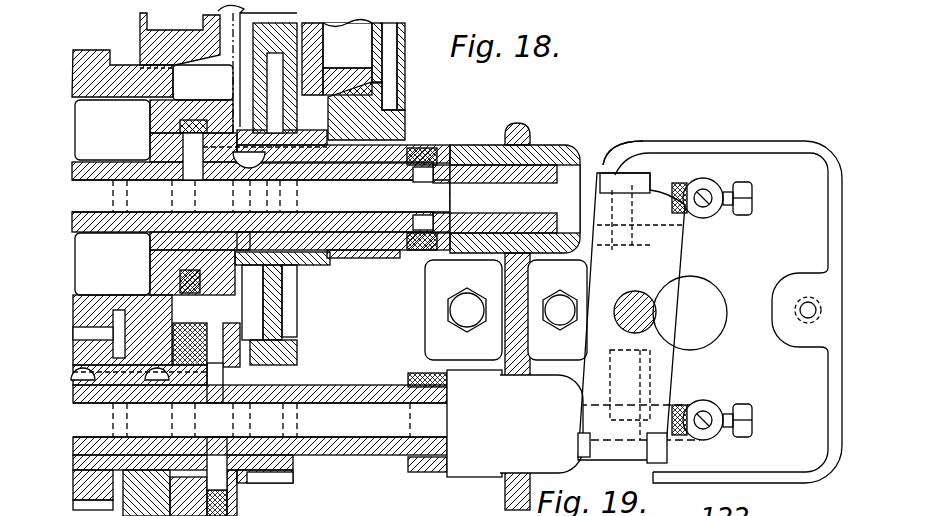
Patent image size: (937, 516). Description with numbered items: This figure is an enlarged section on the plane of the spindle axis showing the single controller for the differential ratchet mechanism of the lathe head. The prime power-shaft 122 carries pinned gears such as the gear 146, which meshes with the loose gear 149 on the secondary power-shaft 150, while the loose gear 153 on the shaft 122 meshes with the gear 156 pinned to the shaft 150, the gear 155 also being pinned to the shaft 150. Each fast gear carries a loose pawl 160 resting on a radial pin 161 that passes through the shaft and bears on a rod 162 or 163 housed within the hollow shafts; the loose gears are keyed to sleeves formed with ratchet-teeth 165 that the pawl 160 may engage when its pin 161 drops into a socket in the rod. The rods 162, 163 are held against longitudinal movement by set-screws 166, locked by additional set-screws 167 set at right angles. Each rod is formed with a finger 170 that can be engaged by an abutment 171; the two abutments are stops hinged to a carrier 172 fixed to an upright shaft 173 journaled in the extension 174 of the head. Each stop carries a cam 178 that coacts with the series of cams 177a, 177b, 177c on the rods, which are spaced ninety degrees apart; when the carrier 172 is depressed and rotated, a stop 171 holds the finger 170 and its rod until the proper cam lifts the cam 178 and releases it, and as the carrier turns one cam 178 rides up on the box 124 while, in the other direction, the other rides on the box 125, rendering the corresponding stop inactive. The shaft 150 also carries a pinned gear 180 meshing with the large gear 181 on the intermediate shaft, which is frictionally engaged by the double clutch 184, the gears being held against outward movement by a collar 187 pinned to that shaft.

The gear 155 is at (88, 50).
The gear 156 is at (178, 78).
The loose pawl 160 is at (177, 120).
The pin 161 is at (180, 152).
The ratchet-teeth 165 is at (153, 247).
The gear 153 is at (147, 293).
The double clutch 184 is at (328, 95).
The large gear 181 is at (375, 123).
The rod 163 is at (460, 200).
The box 125 is at (533, 150).
The secondary power-shaft 150 is at (543, 157).
The cam 177a is at (617, 147).
The cam 177b is at (656, 343).
The cam 177c is at (557, 310).
The cam 178 is at (610, 183).
The finger 170 is at (662, 185).
The abutment 171 is at (672, 183).
The set-screw 167 is at (713, 183).
The set-screw 166 is at (753, 193).
The carrier 172 is at (663, 290).
The extension 174 is at (840, 252).
The upright shaft 173 is at (647, 308).
The gear 149 is at (222, 370).
The gear 180 is at (418, 262).
The collar 187 is at (436, 310).
The prime power-shaft 122 is at (337, 392).
The rod 162 is at (333, 418).
The box 124 is at (463, 470).
The gear 146 is at (273, 477).